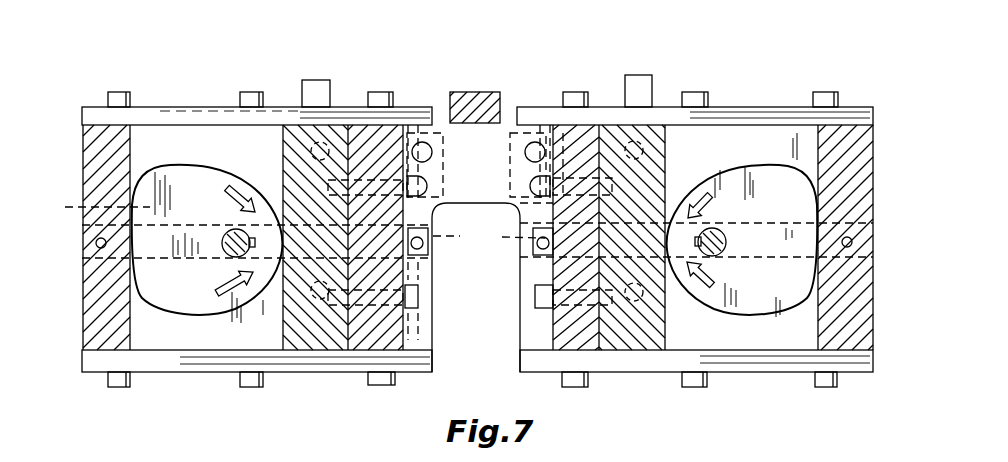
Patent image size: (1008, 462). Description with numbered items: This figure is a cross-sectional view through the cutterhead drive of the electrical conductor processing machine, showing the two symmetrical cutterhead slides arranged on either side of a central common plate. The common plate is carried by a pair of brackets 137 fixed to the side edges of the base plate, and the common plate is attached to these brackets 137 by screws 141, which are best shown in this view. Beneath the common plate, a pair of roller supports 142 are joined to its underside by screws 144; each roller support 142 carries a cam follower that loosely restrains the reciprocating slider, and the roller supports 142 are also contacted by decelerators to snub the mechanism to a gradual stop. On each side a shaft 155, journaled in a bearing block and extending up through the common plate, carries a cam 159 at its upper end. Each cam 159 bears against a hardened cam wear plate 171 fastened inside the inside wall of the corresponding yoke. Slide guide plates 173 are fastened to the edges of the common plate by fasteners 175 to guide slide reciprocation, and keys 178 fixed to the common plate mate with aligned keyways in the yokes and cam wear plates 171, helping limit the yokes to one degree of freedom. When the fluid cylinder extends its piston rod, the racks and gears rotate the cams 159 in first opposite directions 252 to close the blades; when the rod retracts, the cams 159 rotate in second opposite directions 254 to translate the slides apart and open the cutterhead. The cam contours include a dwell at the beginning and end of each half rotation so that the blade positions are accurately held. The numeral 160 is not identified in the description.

The bracket 137 is at (316, 84).
The screw 141 is at (290, 142).
The roller support 142 is at (517, 158).
The screw 144 is at (418, 142).
The shaft 155 is at (232, 228).
The cam 159 is at (211, 298).
The housing assembly 160 is at (74, 286).
The cam wear plate 171 is at (310, 327).
The slide guide plate 173 is at (747, 120).
The fastener 175 is at (828, 92).
The key 178 is at (284, 221).
The first opposite directions 252 is at (216, 280).
The second opposite directions 254 is at (255, 192).